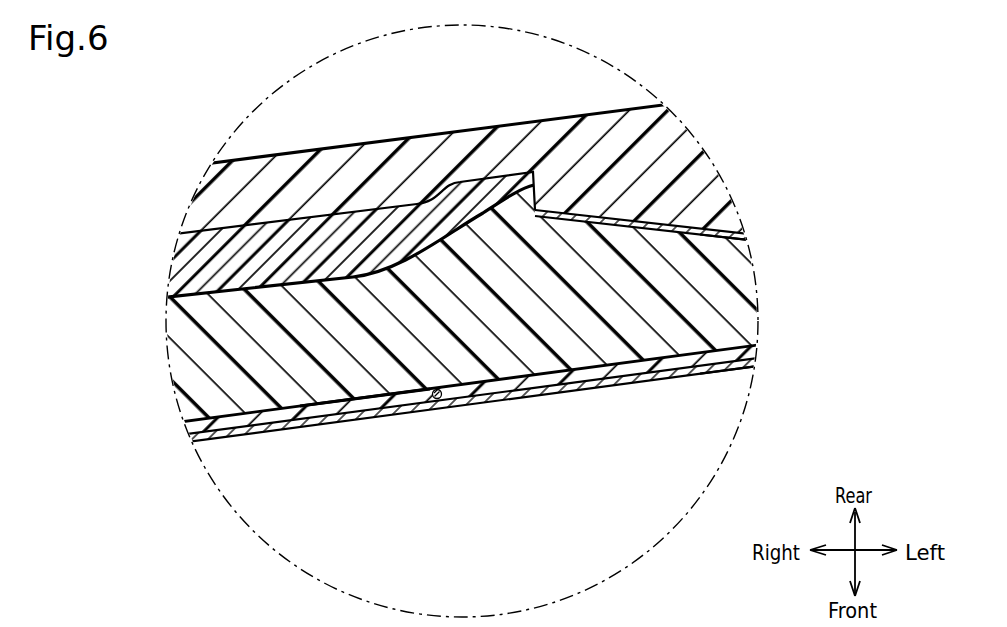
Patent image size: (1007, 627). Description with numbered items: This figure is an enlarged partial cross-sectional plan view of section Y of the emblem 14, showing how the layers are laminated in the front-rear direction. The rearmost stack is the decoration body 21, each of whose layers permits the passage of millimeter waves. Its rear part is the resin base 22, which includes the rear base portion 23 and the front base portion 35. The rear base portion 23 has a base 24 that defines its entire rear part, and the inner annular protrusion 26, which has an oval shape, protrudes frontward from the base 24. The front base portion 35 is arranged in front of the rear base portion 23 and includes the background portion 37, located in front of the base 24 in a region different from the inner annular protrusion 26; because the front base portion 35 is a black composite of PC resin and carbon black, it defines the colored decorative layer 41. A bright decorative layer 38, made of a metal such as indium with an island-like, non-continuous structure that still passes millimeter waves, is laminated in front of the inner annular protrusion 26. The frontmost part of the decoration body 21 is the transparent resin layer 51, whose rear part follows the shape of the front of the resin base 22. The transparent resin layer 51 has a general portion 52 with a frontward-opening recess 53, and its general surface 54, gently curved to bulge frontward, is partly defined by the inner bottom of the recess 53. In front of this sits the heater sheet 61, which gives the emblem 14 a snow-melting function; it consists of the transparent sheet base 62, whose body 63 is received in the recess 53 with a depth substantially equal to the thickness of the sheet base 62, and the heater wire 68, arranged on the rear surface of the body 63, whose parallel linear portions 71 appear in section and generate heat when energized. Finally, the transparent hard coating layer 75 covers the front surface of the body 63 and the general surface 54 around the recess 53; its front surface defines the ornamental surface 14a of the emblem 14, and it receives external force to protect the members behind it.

The emblem 14 is at (494, 337).
The ornamental surface 14a is at (727, 382).
The decoration body 21 is at (505, 168).
The resin base 22 is at (712, 195).
The rear base portion 23 is at (481, 161).
The base 24 is at (481, 161).
The inner annular protrusion 26 is at (657, 208).
The front base portion 35 is at (193, 257).
The background portion 37 is at (295, 238).
The bright decorative layer 38 is at (708, 236).
The colored decorative layer 41 is at (295, 238).
The transparent resin layer 51 is at (746, 252).
The general portion 52 is at (198, 388).
The recess 53 is at (365, 400).
The general surface 54 is at (365, 451).
The heater sheet 61 is at (744, 351).
The sheet base 62 is at (540, 389).
The body 63 is at (540, 389).
The heater wire 68 is at (438, 403).
The linear portion 71 is at (438, 451).
The hard coating layer 75 is at (587, 392).
The section Y is at (648, 552).